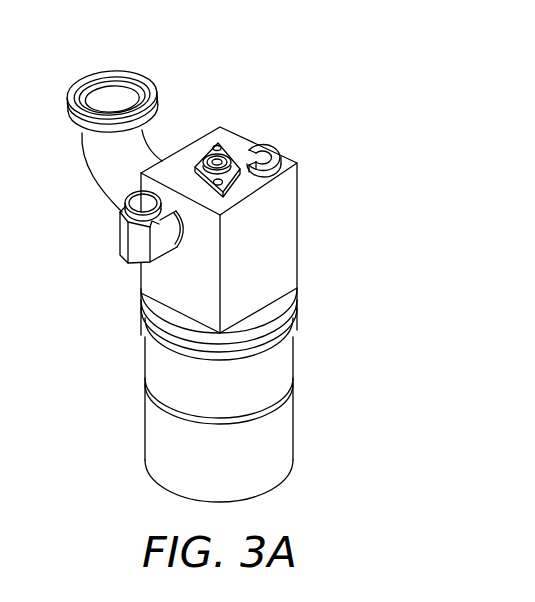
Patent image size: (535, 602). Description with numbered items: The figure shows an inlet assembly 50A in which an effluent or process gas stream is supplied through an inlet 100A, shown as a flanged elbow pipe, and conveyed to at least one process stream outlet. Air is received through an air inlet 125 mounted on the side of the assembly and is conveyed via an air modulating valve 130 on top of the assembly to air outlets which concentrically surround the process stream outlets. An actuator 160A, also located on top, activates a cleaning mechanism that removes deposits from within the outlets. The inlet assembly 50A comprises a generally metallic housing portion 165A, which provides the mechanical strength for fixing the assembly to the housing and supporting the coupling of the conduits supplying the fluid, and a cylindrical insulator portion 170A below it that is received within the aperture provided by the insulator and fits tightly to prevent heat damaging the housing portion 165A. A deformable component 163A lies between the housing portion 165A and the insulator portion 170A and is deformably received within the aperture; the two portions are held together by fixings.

The inlet assembly 50A is at (280, 66).
The inlet 100A is at (112, 108).
The air inlet 125 is at (123, 228).
The air modulating valve 130 is at (217, 146).
The actuator 160A is at (270, 145).
The deformable component 163A is at (155, 401).
The housing portion 165A is at (318, 145).
The insulator portion 170A is at (318, 385).